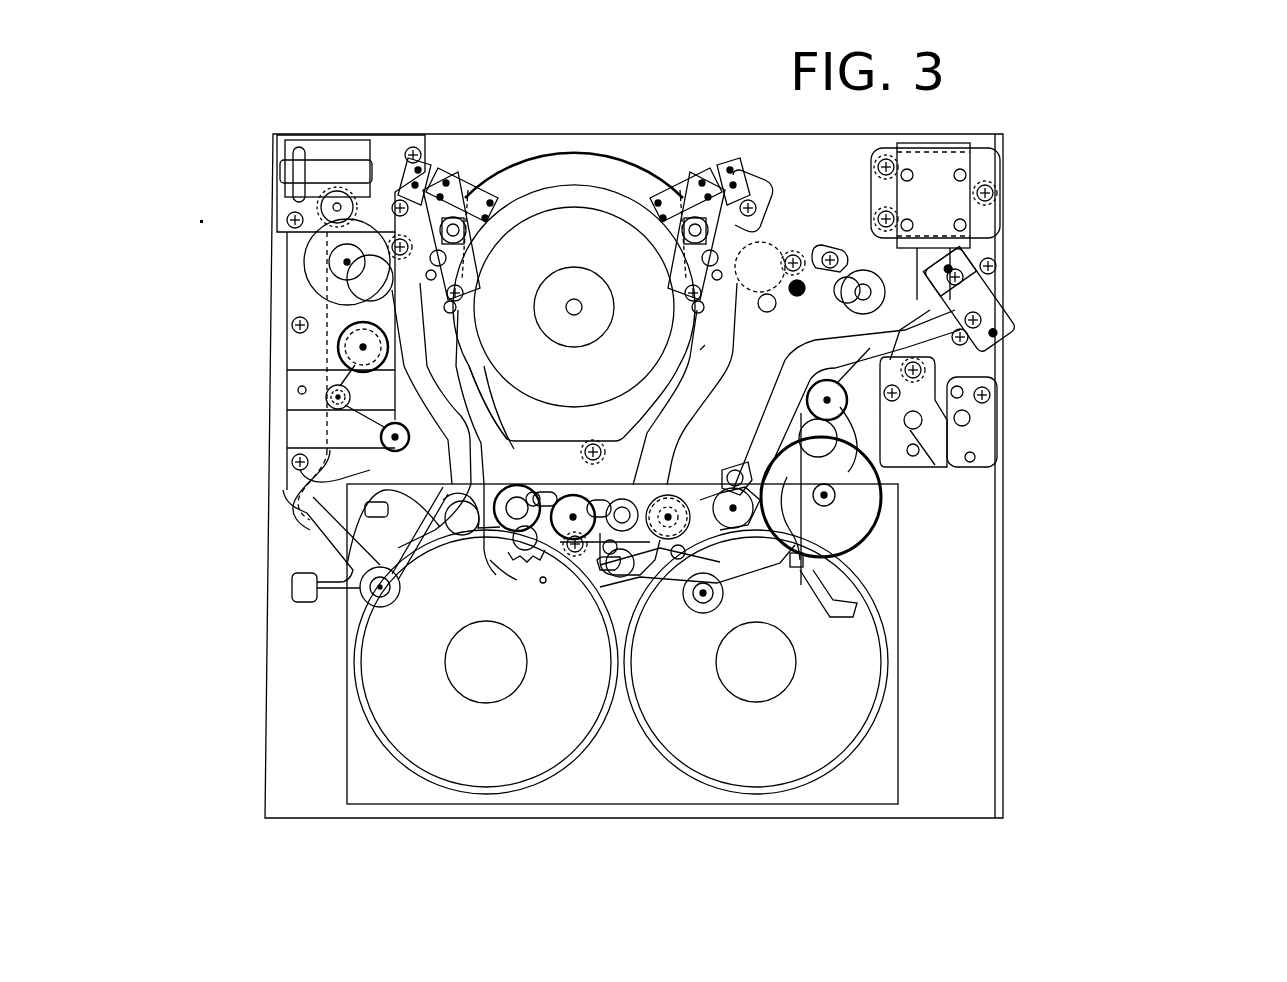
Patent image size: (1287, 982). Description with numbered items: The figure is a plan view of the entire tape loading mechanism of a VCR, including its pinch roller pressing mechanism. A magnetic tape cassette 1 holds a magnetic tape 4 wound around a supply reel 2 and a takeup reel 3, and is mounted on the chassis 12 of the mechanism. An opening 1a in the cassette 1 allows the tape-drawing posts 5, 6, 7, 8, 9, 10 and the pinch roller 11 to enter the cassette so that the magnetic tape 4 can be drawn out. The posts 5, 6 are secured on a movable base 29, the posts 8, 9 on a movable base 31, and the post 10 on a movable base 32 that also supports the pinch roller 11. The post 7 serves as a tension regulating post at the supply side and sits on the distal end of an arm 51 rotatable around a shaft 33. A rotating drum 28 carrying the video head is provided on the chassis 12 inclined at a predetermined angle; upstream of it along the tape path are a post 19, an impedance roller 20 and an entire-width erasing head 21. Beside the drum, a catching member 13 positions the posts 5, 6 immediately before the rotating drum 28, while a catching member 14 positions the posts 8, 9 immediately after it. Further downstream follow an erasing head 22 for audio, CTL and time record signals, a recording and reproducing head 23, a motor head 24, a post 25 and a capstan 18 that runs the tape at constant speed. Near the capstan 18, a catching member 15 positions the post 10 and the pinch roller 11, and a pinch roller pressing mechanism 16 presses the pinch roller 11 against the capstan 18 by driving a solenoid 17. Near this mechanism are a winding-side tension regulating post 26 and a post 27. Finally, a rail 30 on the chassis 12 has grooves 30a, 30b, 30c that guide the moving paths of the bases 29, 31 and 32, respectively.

The magnetic tape cassette 1 is at (806, 806).
The opening 1a is at (543, 584).
The supply reel 2 is at (473, 692).
The takeup reel 3 is at (748, 692).
The magnetic tape 4 is at (308, 519).
The post 5 is at (533, 492).
The post 6 is at (549, 492).
The post 7 is at (569, 496).
The post 8 is at (603, 500).
The post 9 is at (655, 496).
The post 10 is at (718, 488).
The pinch roller 11 is at (660, 605).
The chassis 12 is at (900, 820).
The catching member 13 is at (440, 182).
The catching member 14 is at (705, 182).
The catching member 15 is at (1000, 283).
The pinch roller pressing mechanism 16 is at (1038, 430).
The solenoid 17 is at (926, 188).
The capstan 18 is at (866, 292).
The post 19 is at (408, 436).
The impedance roller 20 is at (367, 360).
The entire-width erasing head 21 is at (388, 310).
The erasing head 22 is at (752, 240).
The recording and reproducing head 23 is at (765, 262).
The motor head 24 is at (785, 285).
The post 25 is at (783, 302).
The tension regulating post 26 is at (842, 396).
The post 27 is at (833, 497).
The rotating drum 28 is at (578, 215).
The movable base 29 is at (518, 565).
The rail 30 is at (467, 537).
The groove 30a is at (514, 442).
The groove 30b is at (718, 358).
The groove 30c is at (786, 372).
The movable base 31 is at (588, 575).
The movable base 32 is at (733, 468).
The shaft 33 is at (392, 598).
The arm 51 is at (418, 543).